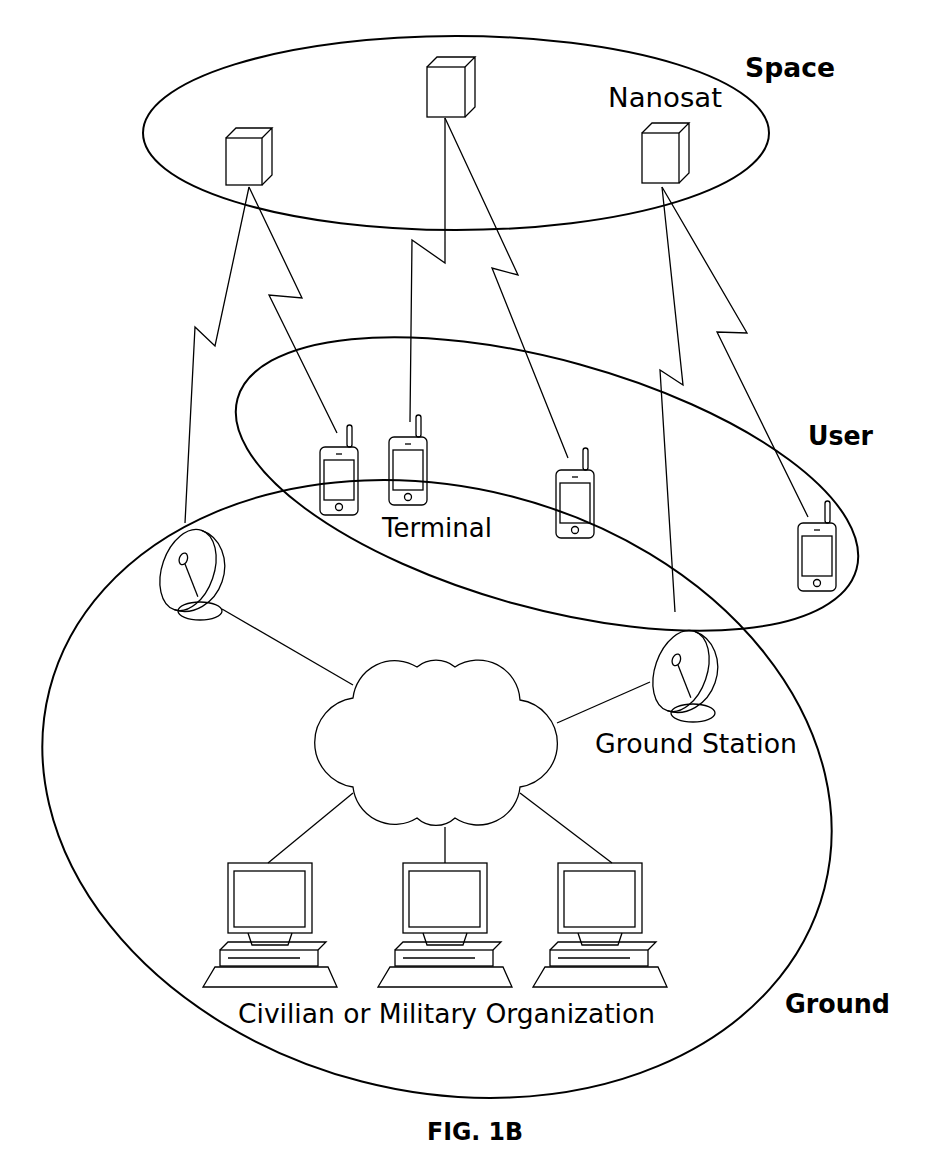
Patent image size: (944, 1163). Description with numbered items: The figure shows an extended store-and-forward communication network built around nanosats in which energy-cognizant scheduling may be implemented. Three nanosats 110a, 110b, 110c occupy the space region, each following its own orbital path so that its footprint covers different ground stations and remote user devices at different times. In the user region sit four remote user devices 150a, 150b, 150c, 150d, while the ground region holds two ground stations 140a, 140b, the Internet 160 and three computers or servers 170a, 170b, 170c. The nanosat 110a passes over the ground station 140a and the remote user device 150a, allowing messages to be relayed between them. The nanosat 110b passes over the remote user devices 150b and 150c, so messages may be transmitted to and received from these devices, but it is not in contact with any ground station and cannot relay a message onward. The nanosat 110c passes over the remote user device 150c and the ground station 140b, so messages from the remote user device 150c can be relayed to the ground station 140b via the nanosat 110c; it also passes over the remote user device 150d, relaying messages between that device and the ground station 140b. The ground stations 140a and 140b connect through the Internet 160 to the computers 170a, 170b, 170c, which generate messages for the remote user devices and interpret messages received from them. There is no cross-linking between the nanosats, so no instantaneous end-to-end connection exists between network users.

The nanosat 110a is at (250, 123).
The nanosat 110b is at (455, 55).
The nanosat 110c is at (640, 160).
The ground station 140a is at (195, 620).
The ground station 140b is at (652, 667).
The remote user device 150a is at (319, 487).
The remote user device 150b is at (428, 457).
The remote user device 150c is at (573, 540).
The remote user device 150d is at (797, 557).
The Internet 160 is at (300, 745).
The computer or server 170a is at (252, 863).
The computer or server 170b is at (427, 860).
The computer or server 170c is at (577, 860).